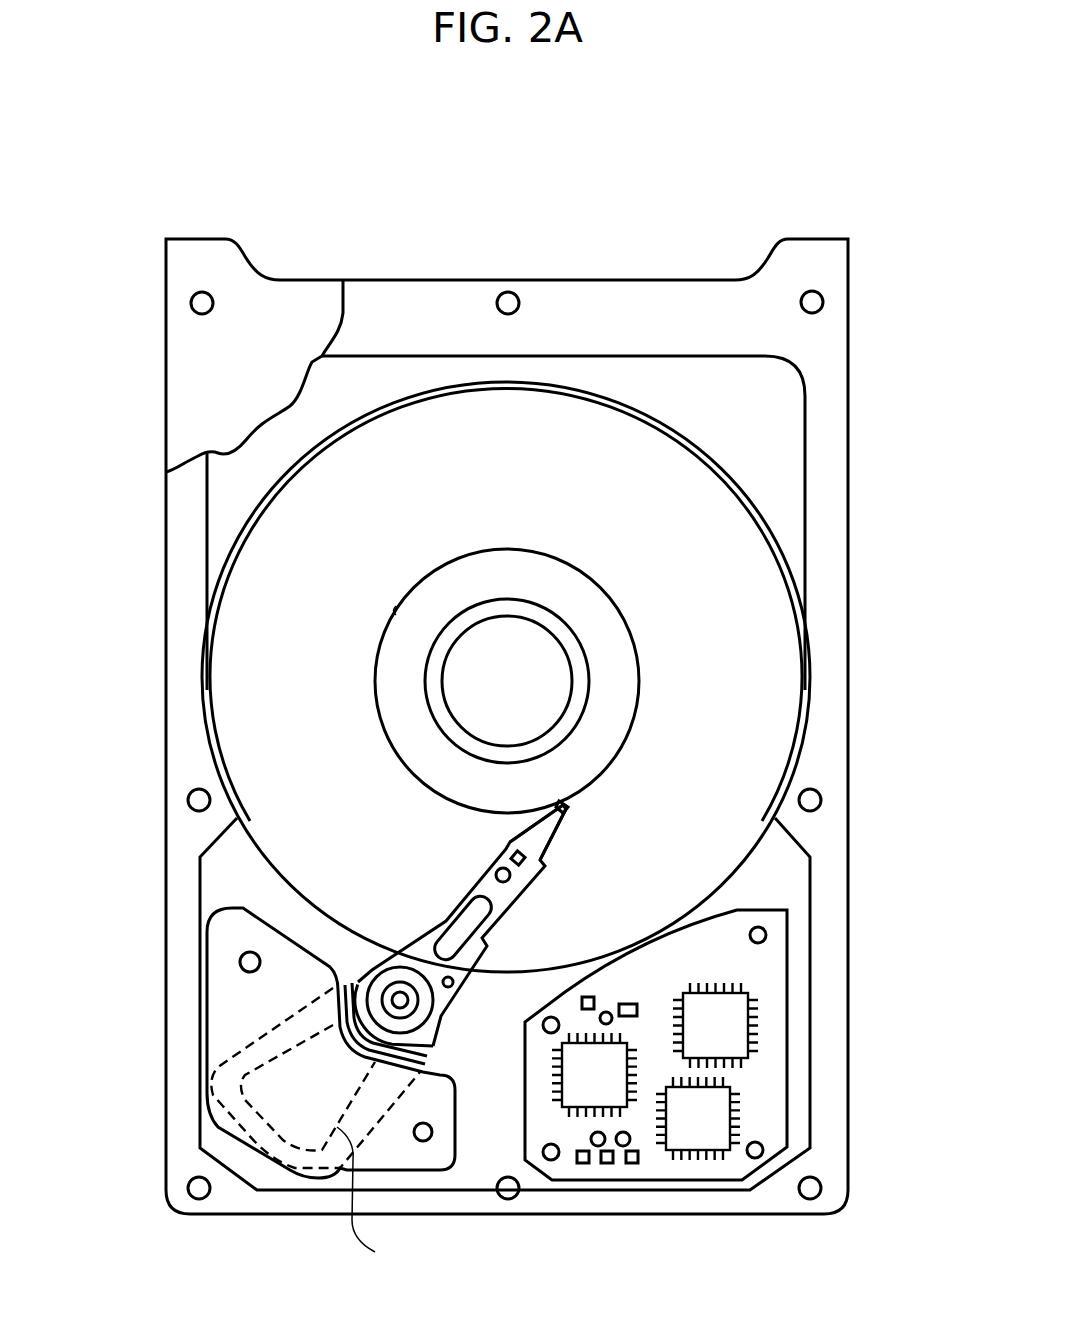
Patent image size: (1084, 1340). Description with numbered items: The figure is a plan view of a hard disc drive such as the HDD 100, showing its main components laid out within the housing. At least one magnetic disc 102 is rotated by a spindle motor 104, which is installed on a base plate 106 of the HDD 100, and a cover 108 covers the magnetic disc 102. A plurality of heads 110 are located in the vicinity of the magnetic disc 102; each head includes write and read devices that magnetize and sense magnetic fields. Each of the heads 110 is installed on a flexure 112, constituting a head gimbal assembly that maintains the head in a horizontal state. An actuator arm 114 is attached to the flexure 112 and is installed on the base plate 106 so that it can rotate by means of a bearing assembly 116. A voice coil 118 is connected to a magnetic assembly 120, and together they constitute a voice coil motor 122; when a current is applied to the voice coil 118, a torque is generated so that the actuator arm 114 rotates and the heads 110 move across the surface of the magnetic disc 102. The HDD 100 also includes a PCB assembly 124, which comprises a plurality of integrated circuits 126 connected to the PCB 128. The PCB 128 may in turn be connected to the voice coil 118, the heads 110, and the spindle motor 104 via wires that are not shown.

The second HDD 100 is at (730, 206).
The magnetic disc 102 is at (238, 688).
The spindle motor 104 is at (535, 677).
The base plate 106 is at (790, 477).
The cover 108 is at (188, 372).
The heads 110 is at (575, 812).
The flexure 112 is at (548, 850).
The actuator arm 114 is at (437, 920).
The bearing assembly 116 is at (427, 1008).
The voice coil 118 is at (378, 1202).
The magnetic assembly 120 is at (223, 988).
The voice coil motor 122 is at (200, 1138).
The PCB assembly 124 is at (726, 1088).
The integrated circuits 126 is at (705, 1132).
The PCB 128 is at (773, 1032).